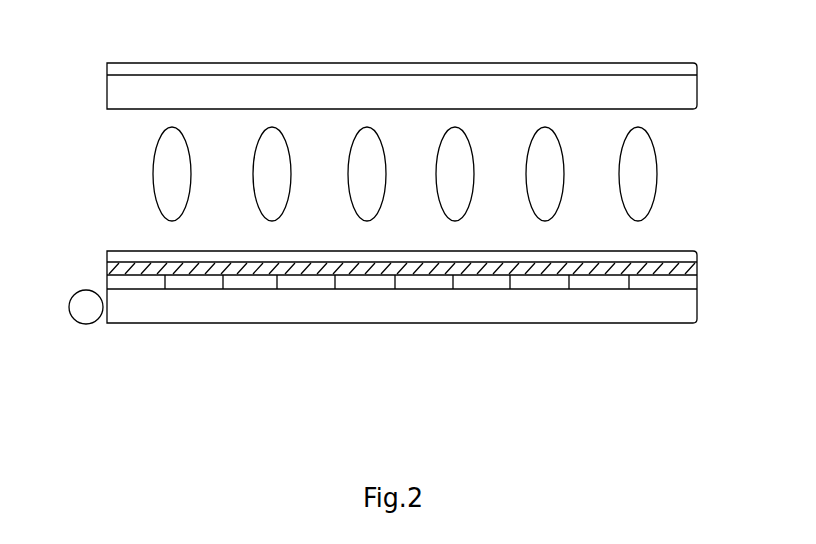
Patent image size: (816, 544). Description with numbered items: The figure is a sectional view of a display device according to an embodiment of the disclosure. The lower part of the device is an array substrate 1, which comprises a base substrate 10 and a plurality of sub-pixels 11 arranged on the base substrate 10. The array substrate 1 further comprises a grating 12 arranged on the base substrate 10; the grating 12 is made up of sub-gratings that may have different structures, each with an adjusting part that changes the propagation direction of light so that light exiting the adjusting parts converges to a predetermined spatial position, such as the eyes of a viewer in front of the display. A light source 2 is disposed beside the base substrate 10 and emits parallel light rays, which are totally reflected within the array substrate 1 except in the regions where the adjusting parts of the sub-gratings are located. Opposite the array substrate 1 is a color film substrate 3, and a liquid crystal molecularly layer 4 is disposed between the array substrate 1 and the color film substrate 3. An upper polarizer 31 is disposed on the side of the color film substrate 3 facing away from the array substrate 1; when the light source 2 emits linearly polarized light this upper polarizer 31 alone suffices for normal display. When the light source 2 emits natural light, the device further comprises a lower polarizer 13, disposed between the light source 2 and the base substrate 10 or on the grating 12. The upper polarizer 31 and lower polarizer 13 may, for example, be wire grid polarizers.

The array substrate 1 is at (416, 312).
The light source 2 is at (86, 307).
The color film substrate 3 is at (415, 60).
The liquid crystal molecularly layer 4 is at (544, 145).
The base substrate 10 is at (487, 307).
The sub-pixels 11 is at (557, 282).
The grating 12 is at (597, 268).
The lower polarizer 13 is at (645, 257).
The upper polarizer 31 is at (618, 70).